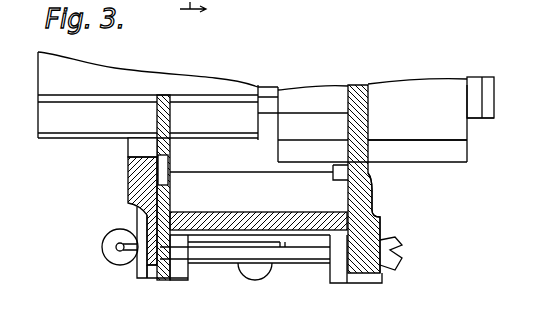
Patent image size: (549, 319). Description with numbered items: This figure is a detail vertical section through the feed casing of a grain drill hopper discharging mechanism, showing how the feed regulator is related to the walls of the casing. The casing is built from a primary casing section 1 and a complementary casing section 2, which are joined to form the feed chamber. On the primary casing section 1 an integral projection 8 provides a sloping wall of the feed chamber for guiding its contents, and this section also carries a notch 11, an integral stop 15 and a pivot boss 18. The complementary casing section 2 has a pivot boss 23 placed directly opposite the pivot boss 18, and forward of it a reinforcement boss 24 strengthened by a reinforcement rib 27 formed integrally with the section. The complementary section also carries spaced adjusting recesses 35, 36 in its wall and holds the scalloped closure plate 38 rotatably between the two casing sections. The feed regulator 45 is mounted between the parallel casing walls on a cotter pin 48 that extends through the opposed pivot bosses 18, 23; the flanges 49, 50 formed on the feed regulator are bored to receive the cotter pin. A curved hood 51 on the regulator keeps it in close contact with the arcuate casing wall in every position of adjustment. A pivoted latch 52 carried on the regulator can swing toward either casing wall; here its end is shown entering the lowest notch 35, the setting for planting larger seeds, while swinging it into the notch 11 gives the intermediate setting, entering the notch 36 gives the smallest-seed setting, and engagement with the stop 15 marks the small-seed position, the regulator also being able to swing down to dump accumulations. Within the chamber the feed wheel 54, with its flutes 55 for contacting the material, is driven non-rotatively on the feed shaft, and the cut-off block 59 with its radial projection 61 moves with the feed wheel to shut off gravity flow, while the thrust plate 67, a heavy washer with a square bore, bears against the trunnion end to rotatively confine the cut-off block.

The primary casing section 1 is at (360, 95).
The complementary casing section 2 is at (128, 166).
The integral projection 8 is at (193, 18).
The notch 11 is at (355, 207).
The integral stop 15 is at (337, 170).
The pivot boss 18 is at (412, 290).
The pivot boss 23 is at (135, 268).
The reinforcement boss 24 is at (146, 231).
The reinforcement rib 27 is at (132, 178).
The adjusting recess 35 is at (150, 263).
The adjusting recess 36 is at (166, 178).
The scalloped closure plate 38 is at (173, 113).
The feed regulator 45 is at (215, 0).
The cotter pin 48 is at (106, 252).
The flange 49 is at (182, 282).
The flange 50 is at (340, 275).
The hood 51 is at (257, 220).
The pivoted latch 52 is at (253, 285).
The feed wheel 54 is at (97, 140).
The flutes 55 is at (123, 100).
The cut-off block 59 is at (477, 78).
The radial projection 61 is at (452, 127).
The thrust plate 67 is at (490, 118).